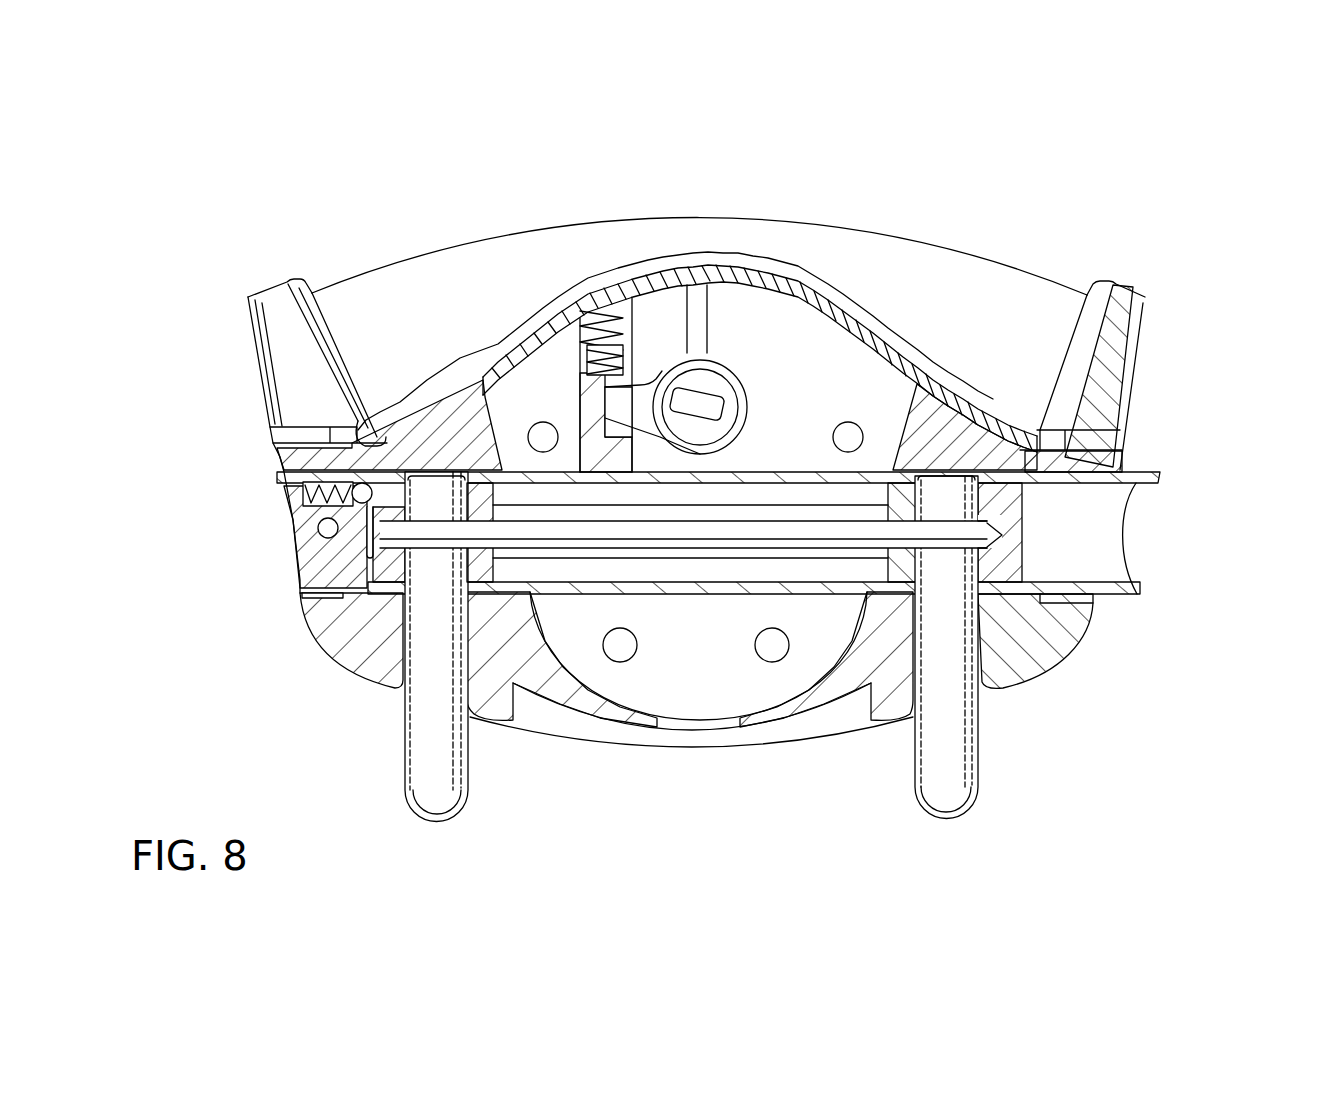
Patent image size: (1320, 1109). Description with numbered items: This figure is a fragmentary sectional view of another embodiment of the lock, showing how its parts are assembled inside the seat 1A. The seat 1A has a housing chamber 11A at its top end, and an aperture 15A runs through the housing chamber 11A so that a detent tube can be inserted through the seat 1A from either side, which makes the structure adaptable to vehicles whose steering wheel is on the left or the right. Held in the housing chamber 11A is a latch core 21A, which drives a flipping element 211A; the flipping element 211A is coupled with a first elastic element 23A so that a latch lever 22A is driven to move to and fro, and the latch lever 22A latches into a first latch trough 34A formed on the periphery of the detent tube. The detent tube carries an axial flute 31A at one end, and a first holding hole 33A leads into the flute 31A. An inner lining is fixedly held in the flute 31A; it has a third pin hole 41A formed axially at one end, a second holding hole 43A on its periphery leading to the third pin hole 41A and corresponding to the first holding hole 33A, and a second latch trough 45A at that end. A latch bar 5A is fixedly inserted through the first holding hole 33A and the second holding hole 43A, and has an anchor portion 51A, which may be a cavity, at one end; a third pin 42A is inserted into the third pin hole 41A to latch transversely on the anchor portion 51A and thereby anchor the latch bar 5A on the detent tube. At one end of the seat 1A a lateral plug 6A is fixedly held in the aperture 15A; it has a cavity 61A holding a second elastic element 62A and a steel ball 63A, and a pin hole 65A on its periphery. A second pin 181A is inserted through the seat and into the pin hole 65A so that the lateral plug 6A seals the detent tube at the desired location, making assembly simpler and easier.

The seat 1A is at (1020, 303).
The latch bar 5A is at (443, 787).
The lateral plug 6A is at (300, 573).
The housing chamber 11A is at (718, 392).
The aperture 15A is at (1082, 448).
The latch core 21A is at (703, 397).
The latch lever 22A is at (586, 423).
The first elastic element 23A is at (612, 345).
The axial flute 31A is at (726, 572).
The first holding hole 33A is at (982, 592).
The first latch trough 34A is at (621, 477).
The third pin hole 41A is at (880, 592).
The third pin 42A is at (808, 528).
The second holding hole 43A is at (980, 565).
The second latch trough 45A is at (378, 433).
The anchor portion 51A is at (933, 550).
The cavity 61A is at (338, 470).
The second elastic element 62A is at (268, 293).
The steel ball 63A is at (367, 483).
The pin hole 65A is at (316, 533).
The second pin 181A is at (325, 545).
The flipping element 211A is at (632, 403).